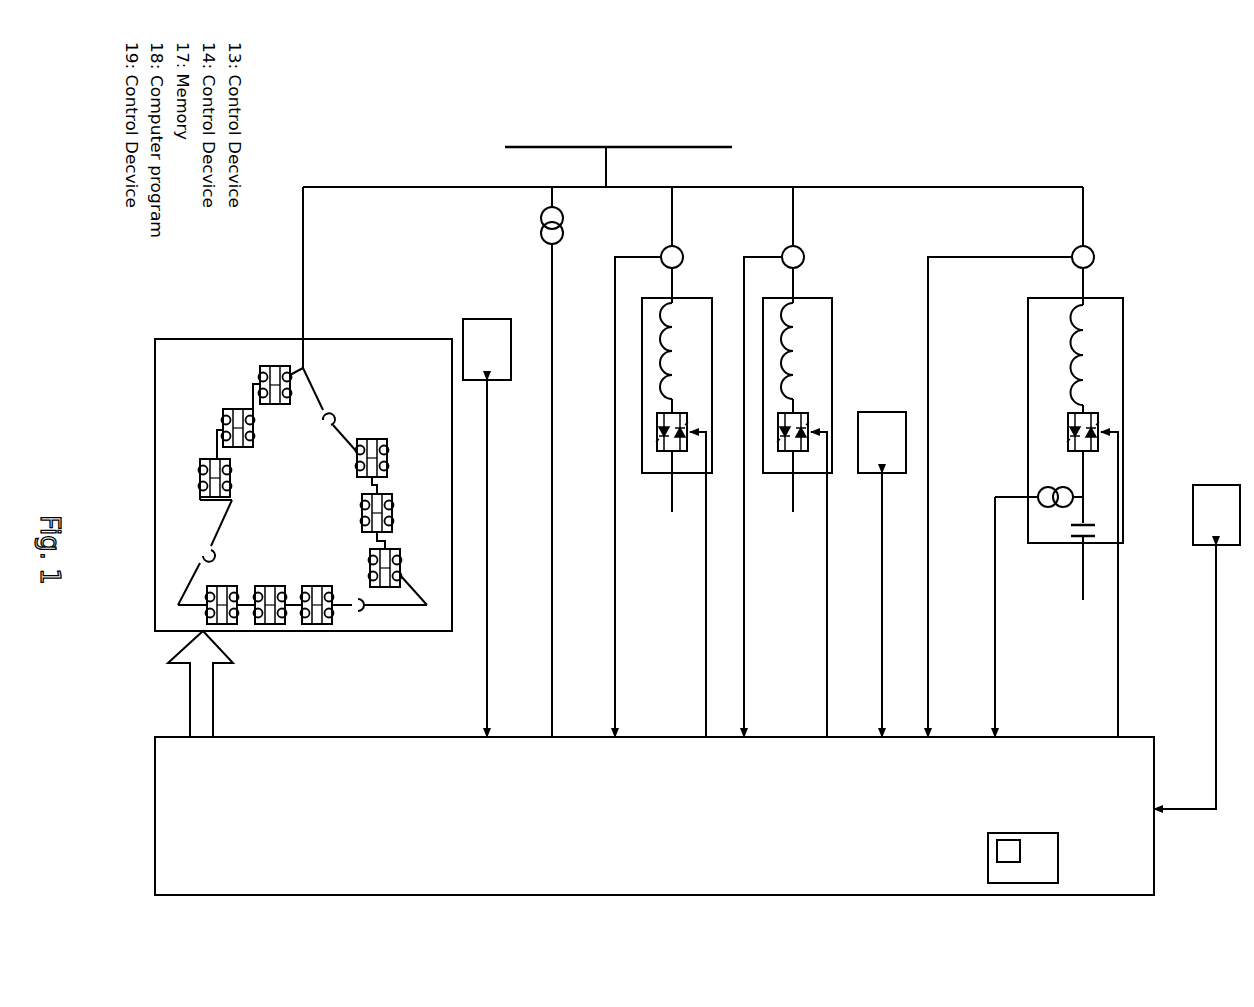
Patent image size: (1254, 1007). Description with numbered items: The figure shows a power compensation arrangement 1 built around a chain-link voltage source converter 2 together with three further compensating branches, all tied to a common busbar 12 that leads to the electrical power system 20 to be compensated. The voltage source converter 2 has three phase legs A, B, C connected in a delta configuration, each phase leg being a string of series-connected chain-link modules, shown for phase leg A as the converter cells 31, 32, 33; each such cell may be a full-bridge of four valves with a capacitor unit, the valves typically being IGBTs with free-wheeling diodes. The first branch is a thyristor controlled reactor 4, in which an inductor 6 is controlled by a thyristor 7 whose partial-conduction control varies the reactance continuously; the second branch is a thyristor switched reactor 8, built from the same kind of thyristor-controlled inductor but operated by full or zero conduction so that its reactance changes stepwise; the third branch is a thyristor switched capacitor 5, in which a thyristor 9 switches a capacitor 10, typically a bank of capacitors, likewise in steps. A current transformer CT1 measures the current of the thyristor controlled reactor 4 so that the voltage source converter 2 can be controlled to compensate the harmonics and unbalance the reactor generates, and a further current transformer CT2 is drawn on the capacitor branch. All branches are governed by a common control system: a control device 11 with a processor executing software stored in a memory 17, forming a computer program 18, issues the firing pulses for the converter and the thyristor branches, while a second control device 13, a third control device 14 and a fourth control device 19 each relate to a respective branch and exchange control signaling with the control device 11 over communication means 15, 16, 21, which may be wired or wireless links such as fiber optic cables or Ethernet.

The power compensation arrangement 1 is at (1054, 138).
The voltage source converter 2 is at (303, 480).
The converter cell 31 is at (212, 455).
The converter cell 32 is at (233, 409).
The converter cell 33 is at (266, 366).
The thyristor controlled reactor 4 is at (809, 462).
The thyristor switched capacitor 5 is at (1045, 462).
The inductor 6 is at (790, 350).
The thyristor 7 is at (788, 475).
The thyristor switched reactor 8 is at (692, 308).
The thyristor 9 is at (1078, 412).
The capacitor 10 is at (1083, 542).
The control device 11 is at (679, 838).
The common busbar 12 is at (1062, 187).
The second control device 13 is at (1218, 500).
The third control device 14 is at (888, 427).
The communication means 15 is at (880, 590).
The communication means 16 is at (1216, 622).
The memory 17 is at (1043, 872).
The computer program 18 is at (1003, 852).
The fourth control device 19 is at (485, 333).
The electrical power system 20 is at (557, 147).
The communication means 21 is at (487, 690).
The phase leg A is at (222, 517).
The phase leg B is at (332, 443).
The phase leg C is at (410, 620).
The current transformer CT1 is at (827, 257).
The current transformer 2 CT2 is at (1116, 258).